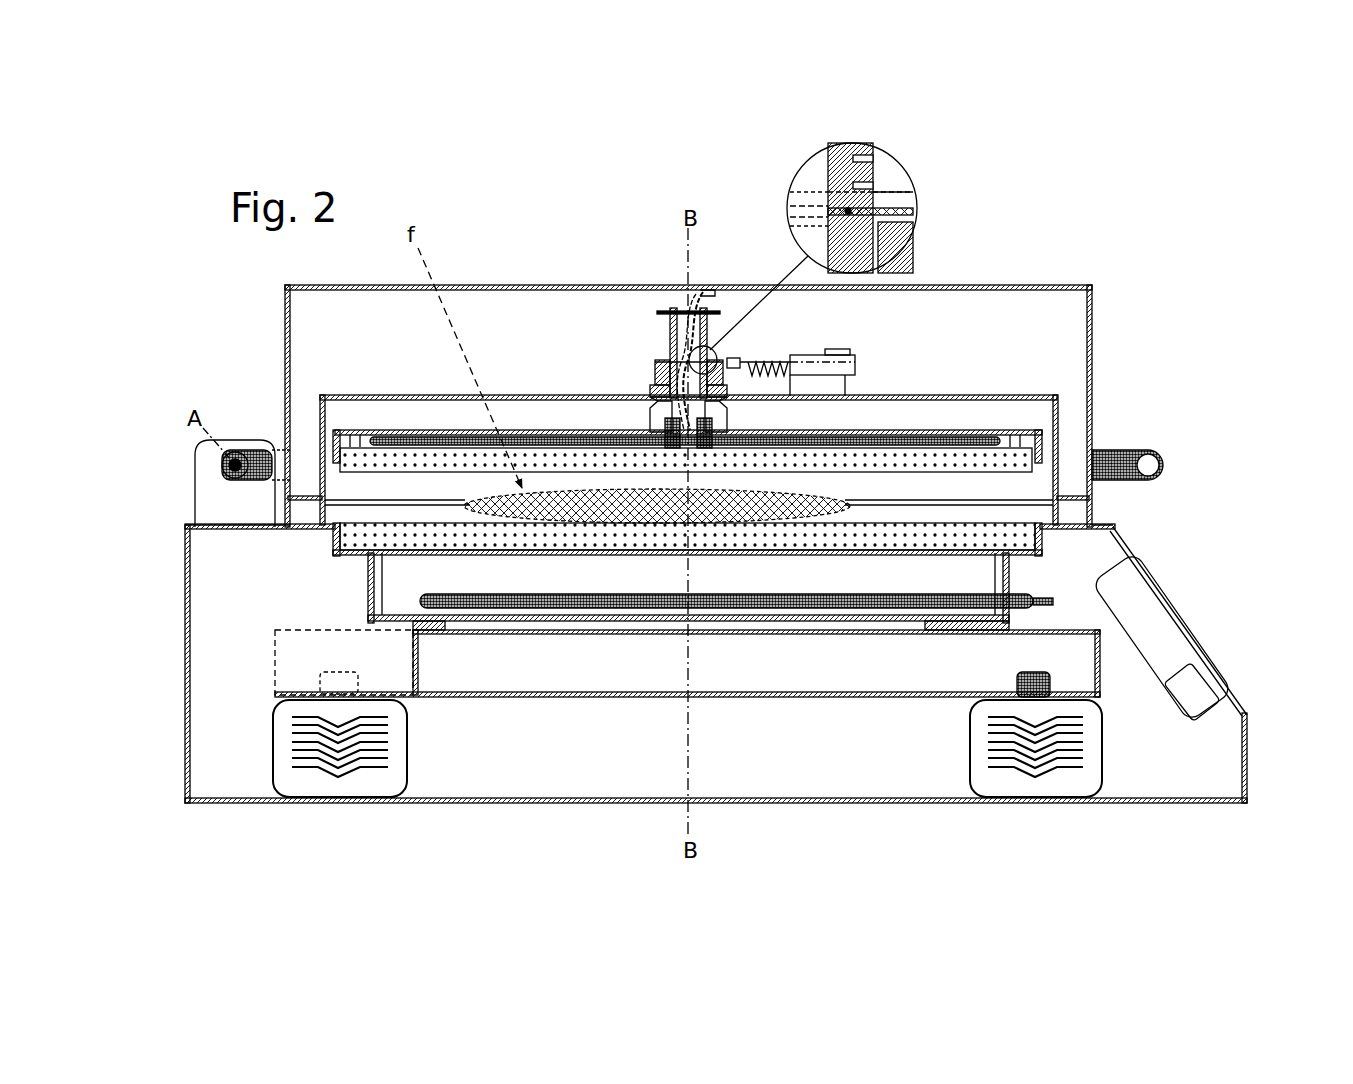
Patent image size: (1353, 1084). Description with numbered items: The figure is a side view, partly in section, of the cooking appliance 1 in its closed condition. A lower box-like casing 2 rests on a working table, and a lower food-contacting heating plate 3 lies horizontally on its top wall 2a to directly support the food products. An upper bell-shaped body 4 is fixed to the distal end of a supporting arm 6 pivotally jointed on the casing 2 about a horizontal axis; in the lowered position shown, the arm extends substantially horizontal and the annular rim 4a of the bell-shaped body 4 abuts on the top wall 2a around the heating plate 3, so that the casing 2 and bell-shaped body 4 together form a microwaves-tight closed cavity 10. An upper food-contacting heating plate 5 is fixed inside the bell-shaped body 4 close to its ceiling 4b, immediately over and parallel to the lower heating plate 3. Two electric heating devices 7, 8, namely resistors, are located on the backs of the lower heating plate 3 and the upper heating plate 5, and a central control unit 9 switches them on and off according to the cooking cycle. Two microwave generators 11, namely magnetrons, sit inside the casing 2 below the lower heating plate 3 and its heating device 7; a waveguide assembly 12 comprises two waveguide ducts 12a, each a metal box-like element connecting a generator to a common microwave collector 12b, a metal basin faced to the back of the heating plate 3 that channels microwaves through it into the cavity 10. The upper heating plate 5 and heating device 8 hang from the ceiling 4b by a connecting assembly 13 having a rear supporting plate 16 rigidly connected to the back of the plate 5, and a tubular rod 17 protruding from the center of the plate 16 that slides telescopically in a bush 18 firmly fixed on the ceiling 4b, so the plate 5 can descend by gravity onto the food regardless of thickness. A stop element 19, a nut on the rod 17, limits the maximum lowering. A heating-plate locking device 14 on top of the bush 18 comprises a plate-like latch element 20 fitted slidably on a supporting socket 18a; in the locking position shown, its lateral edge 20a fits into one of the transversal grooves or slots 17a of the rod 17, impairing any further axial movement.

The cooking appliance 1 is at (1090, 216).
The lower box-like casing 2 is at (184, 772).
The top wall of casing 2a is at (251, 518).
The lower food-contacting heating plate 3 is at (401, 540).
The upper bell-shaped body 4 is at (282, 306).
The annular rim of bell-shaped body 4a is at (300, 531).
The ceiling of bell-shaped body 4b is at (516, 396).
The upper food-contacting heating plate 5 is at (610, 460).
The supporting arm 6 is at (262, 452).
The electric heating device 7 is at (530, 602).
The electric heating device 8 is at (550, 438).
The central control unit 9 is at (1165, 625).
The microwaves-tight closed cavity 10 is at (1048, 484).
The electric microwave generator 11 is at (312, 780).
The waveguide assembly 12 is at (365, 620).
The waveguide duct 12a is at (303, 683).
The common microwave collector 12b is at (1012, 580).
The connecting assembly 13 is at (645, 398).
The heating-plate locking device 14 is at (798, 354).
The rear supporting plate 16 is at (465, 437).
The tubular rod 17 is at (668, 310).
The transversal grooves or slots 17a is at (875, 186).
The bush 18 is at (722, 364).
The supporting socket 18a is at (905, 190).
The stop element 19 is at (718, 310).
The latch element 20 is at (913, 212).
The lateral edge of latch element 20a is at (846, 209).